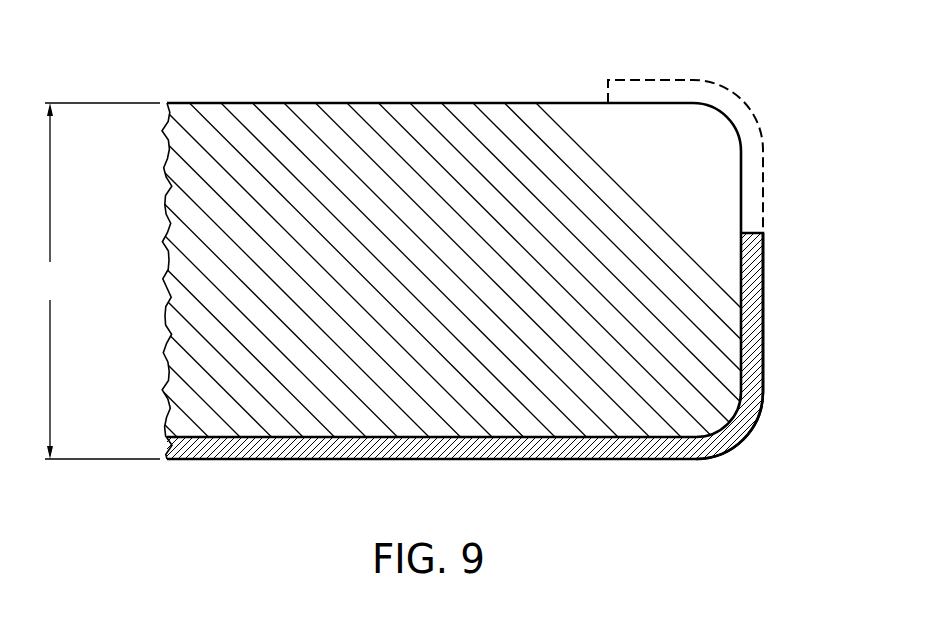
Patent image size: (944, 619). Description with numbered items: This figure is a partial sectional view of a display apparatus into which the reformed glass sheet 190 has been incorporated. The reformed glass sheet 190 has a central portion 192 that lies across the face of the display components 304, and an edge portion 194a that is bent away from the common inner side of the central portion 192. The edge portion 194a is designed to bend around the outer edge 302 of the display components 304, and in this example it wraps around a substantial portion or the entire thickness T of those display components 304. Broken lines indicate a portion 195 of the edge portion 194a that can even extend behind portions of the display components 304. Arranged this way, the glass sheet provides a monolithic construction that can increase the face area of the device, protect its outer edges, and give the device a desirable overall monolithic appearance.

The display components 304 is at (372, 113).
The central portion 192 is at (581, 460).
The outer edge 302 is at (741, 302).
The edge portion 194a is at (763, 358).
The portion of the edge portion 195 is at (743, 101).
The reformed glass sheet 190 is at (652, 470).
The thickness T is at (100, 281).